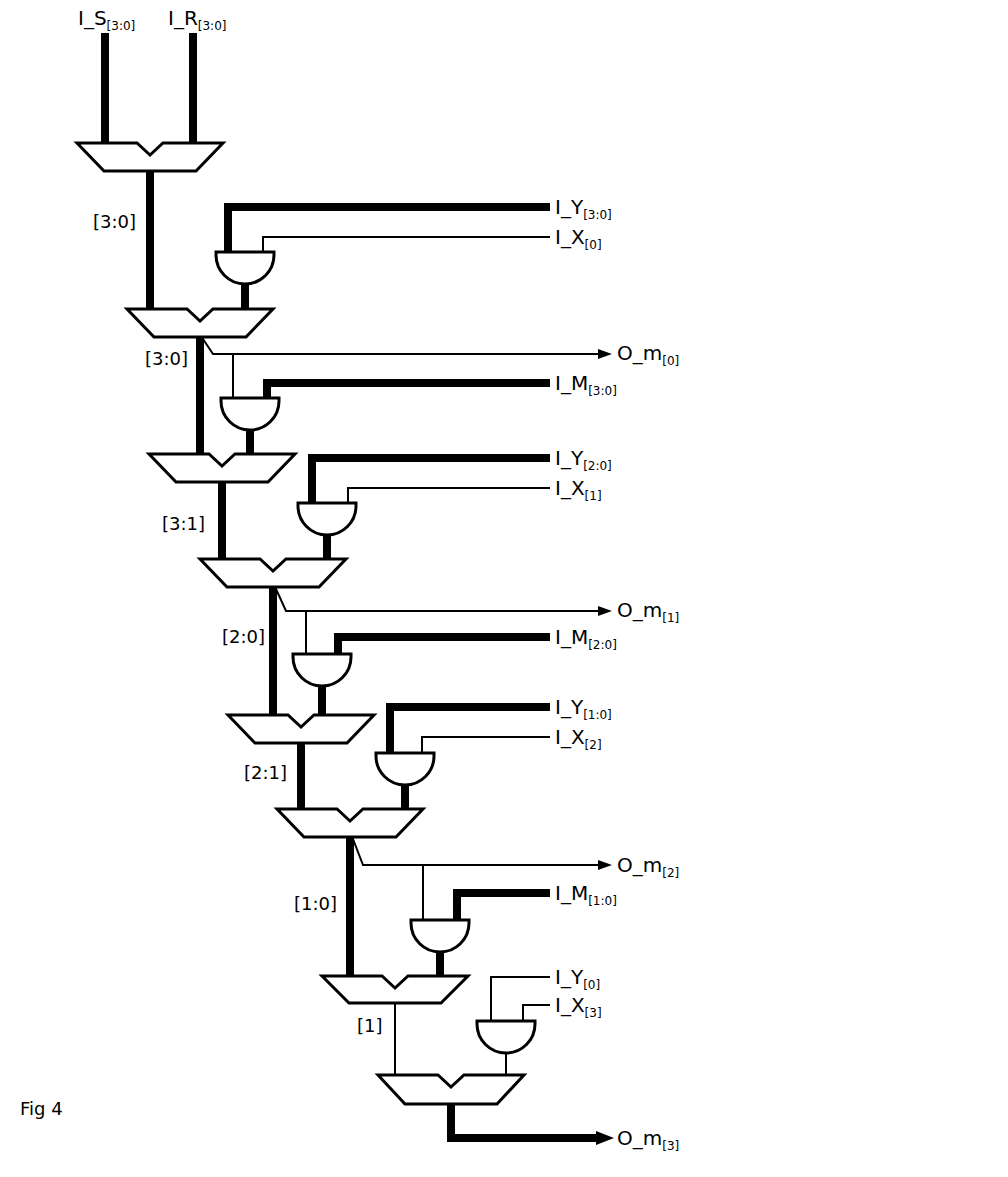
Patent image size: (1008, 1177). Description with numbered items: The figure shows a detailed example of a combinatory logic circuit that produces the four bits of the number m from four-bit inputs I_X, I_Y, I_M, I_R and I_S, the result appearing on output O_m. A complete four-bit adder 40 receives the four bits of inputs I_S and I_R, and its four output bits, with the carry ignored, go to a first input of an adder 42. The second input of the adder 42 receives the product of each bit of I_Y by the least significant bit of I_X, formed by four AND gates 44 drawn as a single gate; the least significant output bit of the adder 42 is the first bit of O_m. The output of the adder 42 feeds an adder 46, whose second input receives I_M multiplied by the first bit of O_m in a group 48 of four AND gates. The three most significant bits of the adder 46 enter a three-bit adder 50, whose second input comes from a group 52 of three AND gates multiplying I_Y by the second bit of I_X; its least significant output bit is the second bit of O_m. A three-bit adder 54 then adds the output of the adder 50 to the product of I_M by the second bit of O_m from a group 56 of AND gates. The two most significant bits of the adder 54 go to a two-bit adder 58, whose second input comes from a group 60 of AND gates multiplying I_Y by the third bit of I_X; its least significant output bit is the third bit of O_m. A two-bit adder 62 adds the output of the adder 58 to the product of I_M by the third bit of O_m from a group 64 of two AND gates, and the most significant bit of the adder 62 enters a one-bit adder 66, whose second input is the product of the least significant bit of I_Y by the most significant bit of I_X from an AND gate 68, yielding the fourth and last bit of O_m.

The complete 4-bit adder 40 is at (206, 157).
The adder 42 is at (252, 320).
The AND gates 44 is at (256, 262).
The adder 46 is at (178, 465).
The group of four AND gates 48 is at (259, 407).
The 3-bit adder 50 is at (226, 576).
The group of three AND gates 52 is at (340, 517).
The 3-bit adder 54 is at (260, 732).
The group of three AND gates 56 is at (334, 661).
The 2-bit adder 58 is at (313, 836).
The group of AND gates 60 is at (418, 774).
The 2-bit adder 62 is at (348, 986).
The group of two AND gates 64 is at (457, 926).
The 1-bit adder 66 is at (407, 1088).
The AND gate 68 is at (512, 1034).